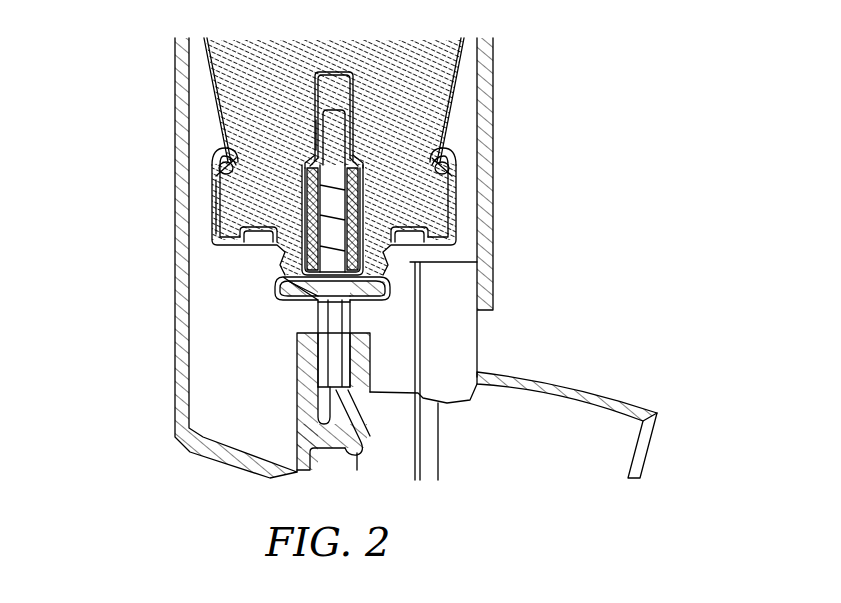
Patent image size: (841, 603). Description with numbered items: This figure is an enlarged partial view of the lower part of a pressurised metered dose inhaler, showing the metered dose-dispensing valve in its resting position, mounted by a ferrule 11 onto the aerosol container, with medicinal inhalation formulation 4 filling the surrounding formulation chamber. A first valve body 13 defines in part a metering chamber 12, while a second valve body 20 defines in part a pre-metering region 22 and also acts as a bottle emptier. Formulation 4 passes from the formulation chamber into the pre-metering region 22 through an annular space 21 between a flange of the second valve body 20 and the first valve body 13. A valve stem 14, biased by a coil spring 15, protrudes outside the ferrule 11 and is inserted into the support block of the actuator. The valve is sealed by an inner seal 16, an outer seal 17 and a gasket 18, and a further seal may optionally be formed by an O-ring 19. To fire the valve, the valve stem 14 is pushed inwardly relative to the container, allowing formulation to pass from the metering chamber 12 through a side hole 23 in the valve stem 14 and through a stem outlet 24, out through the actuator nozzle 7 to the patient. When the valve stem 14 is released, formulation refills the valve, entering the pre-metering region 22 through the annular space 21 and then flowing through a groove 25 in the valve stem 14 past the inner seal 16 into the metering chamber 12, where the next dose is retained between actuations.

The medicinal inhalation formulation 4 is at (265, 77).
The actuator nozzle 7 is at (335, 417).
The ferrule 11 is at (212, 191).
The metering chamber 12 is at (362, 214).
The first valve body 13 is at (395, 255).
The valve stem 14 is at (350, 319).
The coil spring 15 is at (330, 183).
The inner seal 16 is at (305, 170).
The outer seal 17 is at (300, 282).
The gasket 18 is at (222, 237).
The O-ring 19 is at (455, 167).
The second valve body 20 is at (335, 132).
The annular space 21 is at (300, 245).
The pre-metering region 22 is at (333, 91).
The side hole 23 is at (322, 301).
The stem outlet 24 is at (340, 388).
The groove 25 is at (318, 133).